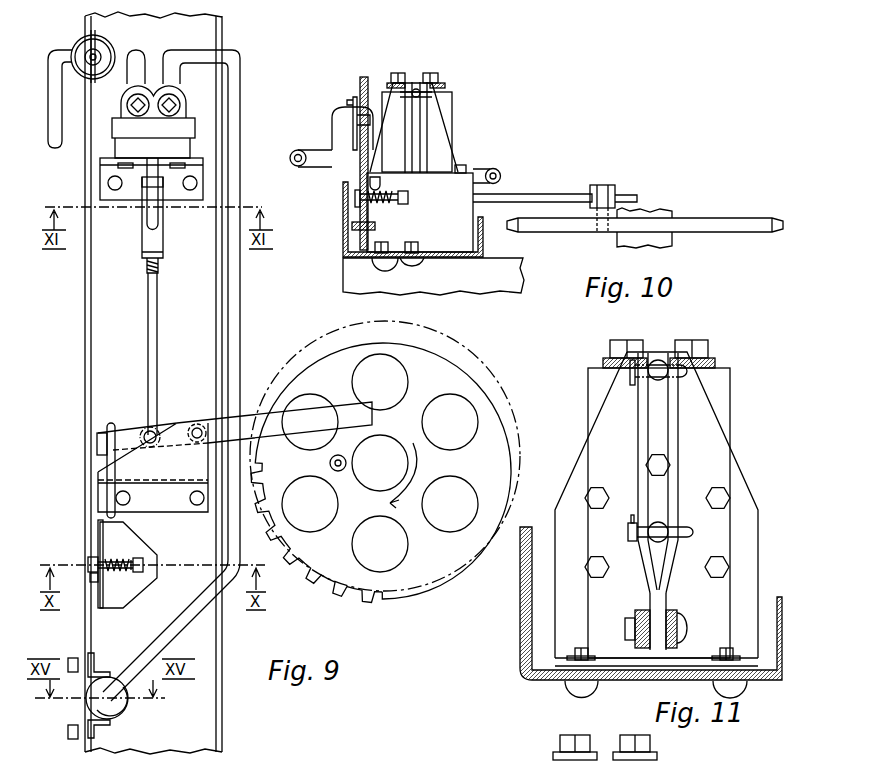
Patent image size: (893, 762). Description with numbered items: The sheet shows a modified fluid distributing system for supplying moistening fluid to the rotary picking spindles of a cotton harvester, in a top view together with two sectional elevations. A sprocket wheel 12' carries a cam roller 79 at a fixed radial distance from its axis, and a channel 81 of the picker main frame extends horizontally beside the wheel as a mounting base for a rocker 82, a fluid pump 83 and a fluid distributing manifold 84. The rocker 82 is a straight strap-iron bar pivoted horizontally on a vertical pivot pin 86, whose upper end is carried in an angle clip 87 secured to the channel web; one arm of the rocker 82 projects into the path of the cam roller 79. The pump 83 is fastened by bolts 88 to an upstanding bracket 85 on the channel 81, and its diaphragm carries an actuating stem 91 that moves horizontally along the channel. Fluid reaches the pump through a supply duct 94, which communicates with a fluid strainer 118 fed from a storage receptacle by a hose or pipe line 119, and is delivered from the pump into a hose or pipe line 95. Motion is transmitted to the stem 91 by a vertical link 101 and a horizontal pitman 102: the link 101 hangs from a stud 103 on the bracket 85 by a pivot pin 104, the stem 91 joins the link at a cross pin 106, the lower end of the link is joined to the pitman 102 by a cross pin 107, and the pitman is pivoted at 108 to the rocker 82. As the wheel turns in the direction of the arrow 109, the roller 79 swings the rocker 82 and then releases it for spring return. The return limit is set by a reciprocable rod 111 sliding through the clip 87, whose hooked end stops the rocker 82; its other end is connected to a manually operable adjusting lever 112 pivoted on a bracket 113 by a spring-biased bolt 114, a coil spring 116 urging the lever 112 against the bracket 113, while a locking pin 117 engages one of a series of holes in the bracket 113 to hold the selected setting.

In FIG. 9, the sprocket wheel 12' is at (385, 473).
In FIG. 10, the sprocket wheel 12' is at (645, 213).
In FIG. 9, the cam roller 79 is at (330, 463).
In FIG. 10, the cam roller 79 is at (615, 192).
In FIG. 9, the channel 81 is at (88, 345).
In FIG. 10, the channel 81 is at (468, 258).
In FIG. 11, the channel 81 is at (524, 628).
In FIG. 9, the rocker 82 is at (340, 404).
In FIG. 10, the rocker 82 is at (549, 193).
In FIG. 9, the fluid pump 83 is at (181, 94).
In FIG. 10, the fluid pump 83 is at (451, 104).
In FIG. 11, the fluid pump 83 is at (733, 401).
In FIG. 9, the fluid distributing manifold 84 is at (113, 719).
In FIG. 9, the bracket 85 is at (181, 198).
In FIG. 11, the bracket 85 is at (735, 471).
In FIG. 9, the pivot pin 86 is at (197, 425).
In FIG. 10, the pivot pin 86 is at (468, 167).
In FIG. 9, the angle clip 87 is at (187, 509).
In FIG. 10, the angle clip 87 is at (434, 172).
In FIG. 11, the bolts 88 is at (583, 648).
In FIG. 11, the actuating stem 91 is at (669, 531).
In FIG. 9, the fluid supply duct 94 is at (128, 50).
In FIG. 9, the hose or pipe line 95 is at (190, 50).
In FIG. 10, the hose or pipe line 95 is at (503, 172).
In FIG. 11, the vertical link 101 is at (680, 457).
In FIG. 9, the horizontal pitman 102 is at (157, 324).
In FIG. 11, the horizontal pitman 102 is at (669, 609).
In FIG. 11, the stud 103 is at (660, 360).
In FIG. 9, the pivot pin 104 is at (143, 190).
In FIG. 11, the pivot pin 104 is at (632, 374).
In FIG. 11, the cross pin 106 is at (628, 534).
In FIG. 11, the cross pin 107 is at (628, 627).
In FIG. 9, the pivotal connection 108 is at (146, 430).
In FIG. 9, the arrow 109 is at (418, 471).
In FIG. 9, the reciprocable rod 111 is at (107, 463).
In FIG. 10, the reciprocable rod 111 is at (377, 178).
In FIG. 9, the adjusting lever 112 is at (96, 556).
In FIG. 10, the adjusting lever 112 is at (363, 77).
In FIG. 9, the bracket 113 is at (120, 603).
In FIG. 10, the bracket 113 is at (360, 255).
In FIG. 9, the bolt 114 is at (145, 563).
In FIG. 10, the bolt 114 is at (410, 197).
In FIG. 9, the coil spring 116 is at (128, 554).
In FIG. 10, the coil spring 116 is at (388, 207).
In FIG. 10, the locking pin 117 is at (346, 122).
In FIG. 9, the fluid strainer 118 is at (70, 44).
In FIG. 9, the hose or pipe line 119 is at (49, 121).